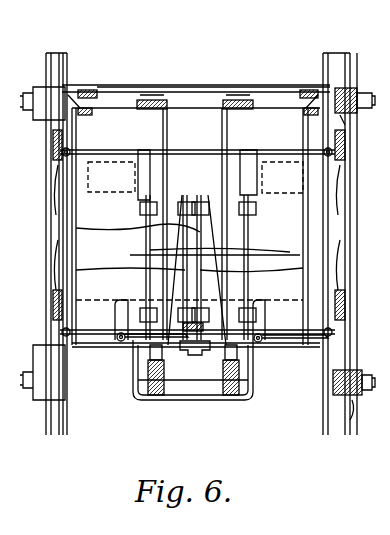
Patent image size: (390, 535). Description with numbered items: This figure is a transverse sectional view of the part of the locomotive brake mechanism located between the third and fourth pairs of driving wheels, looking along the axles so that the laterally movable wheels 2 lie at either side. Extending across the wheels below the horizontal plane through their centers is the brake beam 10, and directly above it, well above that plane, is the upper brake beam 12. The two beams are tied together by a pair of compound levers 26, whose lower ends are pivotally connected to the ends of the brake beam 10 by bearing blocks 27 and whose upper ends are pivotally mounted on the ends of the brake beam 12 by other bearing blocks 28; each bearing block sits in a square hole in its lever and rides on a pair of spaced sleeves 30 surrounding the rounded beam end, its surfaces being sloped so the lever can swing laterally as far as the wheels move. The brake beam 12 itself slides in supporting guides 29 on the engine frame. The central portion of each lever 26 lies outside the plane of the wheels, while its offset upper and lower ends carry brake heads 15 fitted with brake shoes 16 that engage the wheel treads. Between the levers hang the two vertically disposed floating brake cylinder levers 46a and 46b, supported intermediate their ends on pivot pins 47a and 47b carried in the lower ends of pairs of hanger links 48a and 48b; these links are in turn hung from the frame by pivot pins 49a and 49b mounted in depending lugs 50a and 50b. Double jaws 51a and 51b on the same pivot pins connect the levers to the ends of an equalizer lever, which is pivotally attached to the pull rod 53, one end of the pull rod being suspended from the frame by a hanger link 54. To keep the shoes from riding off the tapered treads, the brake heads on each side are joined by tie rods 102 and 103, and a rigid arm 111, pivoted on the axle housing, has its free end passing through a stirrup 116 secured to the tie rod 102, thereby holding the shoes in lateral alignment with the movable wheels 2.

The wheels 2 is at (62, 416).
The brake beam 10 is at (255, 398).
The brake beam 12 is at (192, 100).
The brake heads 15 is at (27, 160).
The brake shoes 16 is at (58, 265).
The compound levers 26 is at (46, 262).
The bearing blocks 27 is at (352, 400).
The bearing blocks 28 is at (348, 90).
The supporting guides 29 is at (88, 92).
The spaced sleeves 30 is at (350, 115).
The brake cylinder lever 46a is at (155, 131).
The brake cylinder lever 46b is at (272, 131).
The pivot pin 47a is at (125, 310).
The pivot pin 47b is at (265, 313).
The hanger links 48a is at (136, 270).
The hanger links 48b is at (245, 283).
The pivot pin 49a is at (142, 207).
The pivot pin 49b is at (263, 187).
The depending lug 50a is at (136, 237).
The depending lug 50b is at (248, 223).
The double jaw 51a is at (132, 355).
The double jaw 51b is at (250, 358).
The pull rod 53 is at (186, 327).
The hanger link 54 is at (242, 251).
The tie rod 102 is at (148, 398).
The tie rod 103 is at (171, 155).
The rigid arm 111 is at (198, 355).
The stirrup 116 is at (222, 388).